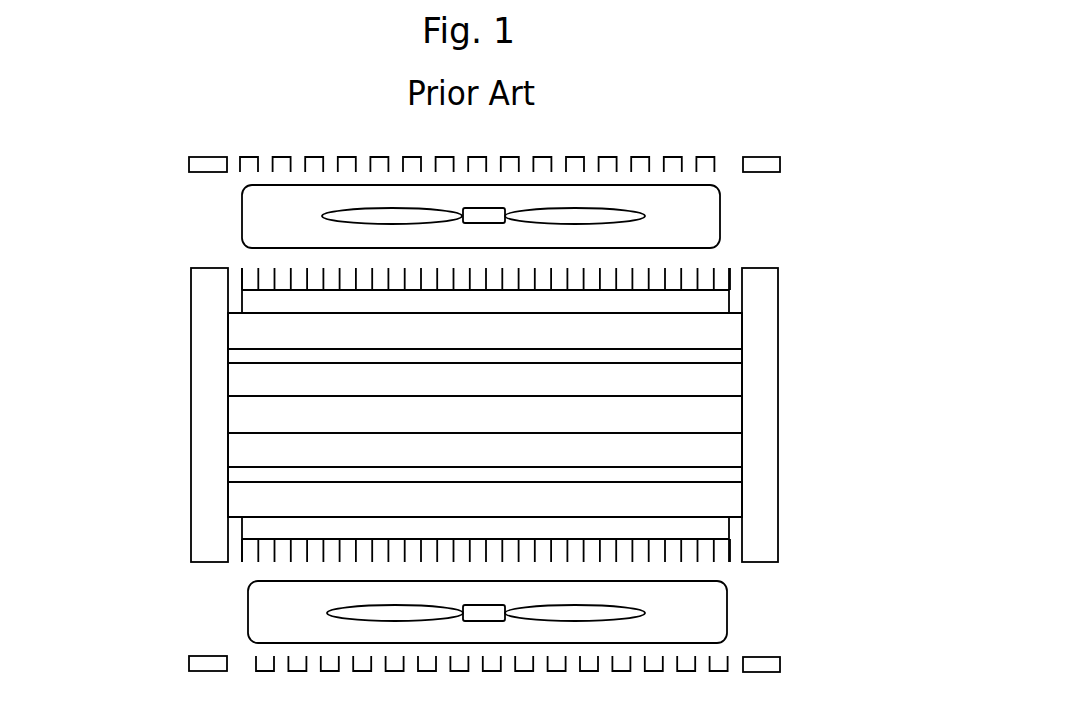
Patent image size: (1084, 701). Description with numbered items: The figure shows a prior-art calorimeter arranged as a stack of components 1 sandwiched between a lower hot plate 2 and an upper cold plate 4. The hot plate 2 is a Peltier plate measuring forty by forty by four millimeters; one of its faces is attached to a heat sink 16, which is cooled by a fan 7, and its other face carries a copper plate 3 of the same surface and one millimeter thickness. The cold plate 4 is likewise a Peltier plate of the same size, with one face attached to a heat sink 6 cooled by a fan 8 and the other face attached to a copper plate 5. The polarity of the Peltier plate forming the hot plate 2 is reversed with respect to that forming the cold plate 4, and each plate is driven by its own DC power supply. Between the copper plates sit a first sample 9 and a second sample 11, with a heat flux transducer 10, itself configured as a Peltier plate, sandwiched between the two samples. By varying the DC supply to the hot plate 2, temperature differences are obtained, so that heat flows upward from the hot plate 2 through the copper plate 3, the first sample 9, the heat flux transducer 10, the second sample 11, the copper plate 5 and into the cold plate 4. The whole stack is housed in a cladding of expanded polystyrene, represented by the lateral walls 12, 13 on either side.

The stack of components 1 is at (218, 135).
The hot plate 2 is at (260, 497).
The copper plate 3 is at (722, 471).
The cold plate 4 is at (302, 331).
The copper plate 5 is at (728, 354).
The heat sink 6 is at (718, 303).
The fan 7 is at (699, 611).
The fan 8 is at (715, 216).
The first sample 9 is at (293, 454).
The heat flux transducer 10 is at (727, 415).
The second sample 11 is at (292, 381).
The lateral wall 12 is at (207, 533).
The lateral wall 13 is at (755, 551).
The heat sink 16 is at (699, 527).